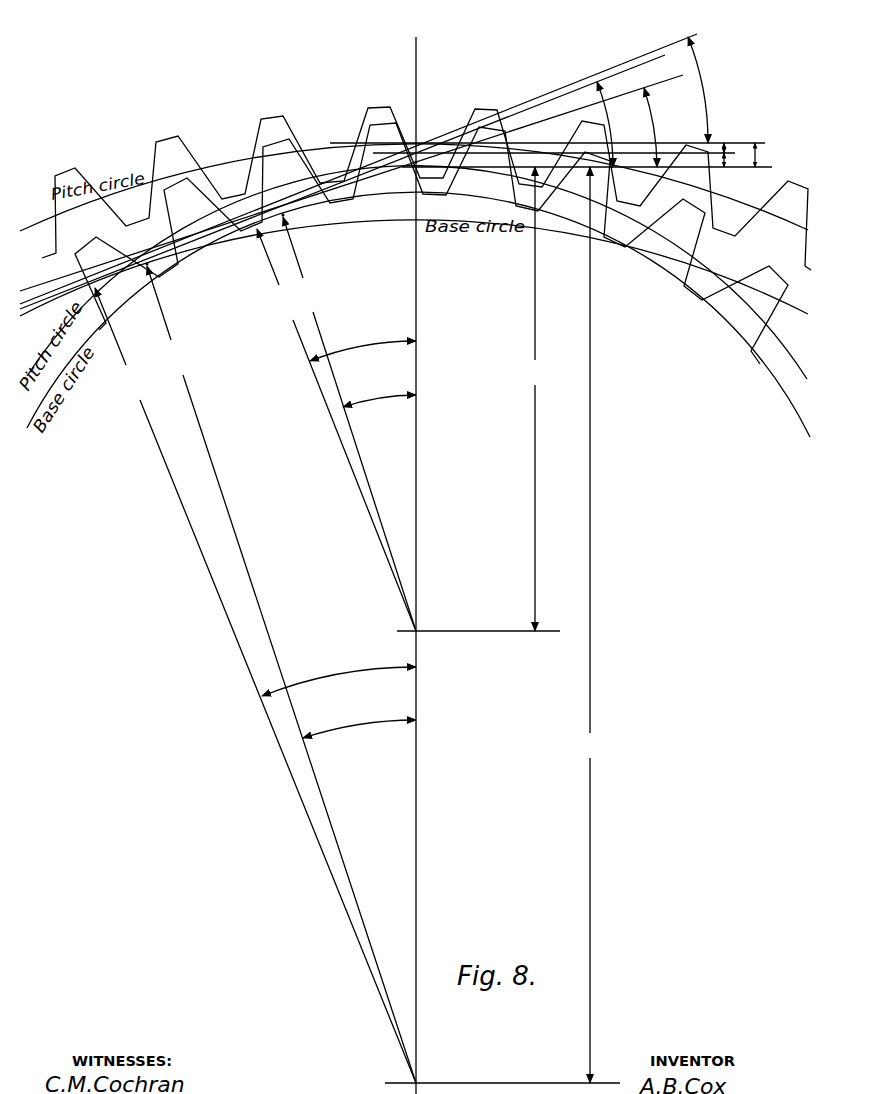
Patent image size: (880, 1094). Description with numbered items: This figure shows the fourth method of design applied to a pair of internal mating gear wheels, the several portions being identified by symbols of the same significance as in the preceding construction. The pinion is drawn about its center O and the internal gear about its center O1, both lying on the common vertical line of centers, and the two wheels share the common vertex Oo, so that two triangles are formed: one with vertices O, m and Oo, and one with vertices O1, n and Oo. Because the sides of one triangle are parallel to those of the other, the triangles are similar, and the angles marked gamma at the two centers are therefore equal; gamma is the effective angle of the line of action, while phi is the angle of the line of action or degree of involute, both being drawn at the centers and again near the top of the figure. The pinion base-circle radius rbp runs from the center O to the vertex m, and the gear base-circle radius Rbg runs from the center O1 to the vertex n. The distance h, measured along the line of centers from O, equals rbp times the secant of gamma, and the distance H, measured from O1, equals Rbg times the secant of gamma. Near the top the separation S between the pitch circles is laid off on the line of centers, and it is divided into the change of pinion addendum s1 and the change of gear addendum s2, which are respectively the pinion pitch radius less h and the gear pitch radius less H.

The pinion center o O is at (478, 620).
The gear center o' O1 is at (502, 1072).
The common vertex o_o Oo is at (413, 168).
The pinion base-circle radius rbp is at (336, 424).
The gear base-circle radius Rbg is at (255, 674).
The angle of line of action phi is at (487, 366).
The effective angle of line of action gamma is at (481, 413).
The pinion distance h is at (534, 399).
The gear distance H is at (589, 625).
The pitch-circle separation S is at (729, 147).
The change of pinion addendum s' s1 is at (728, 167).
The change of gear addendum s'' s2 is at (760, 154).
The triangle vertex m is at (287, 218).
The triangle vertex n is at (150, 269).